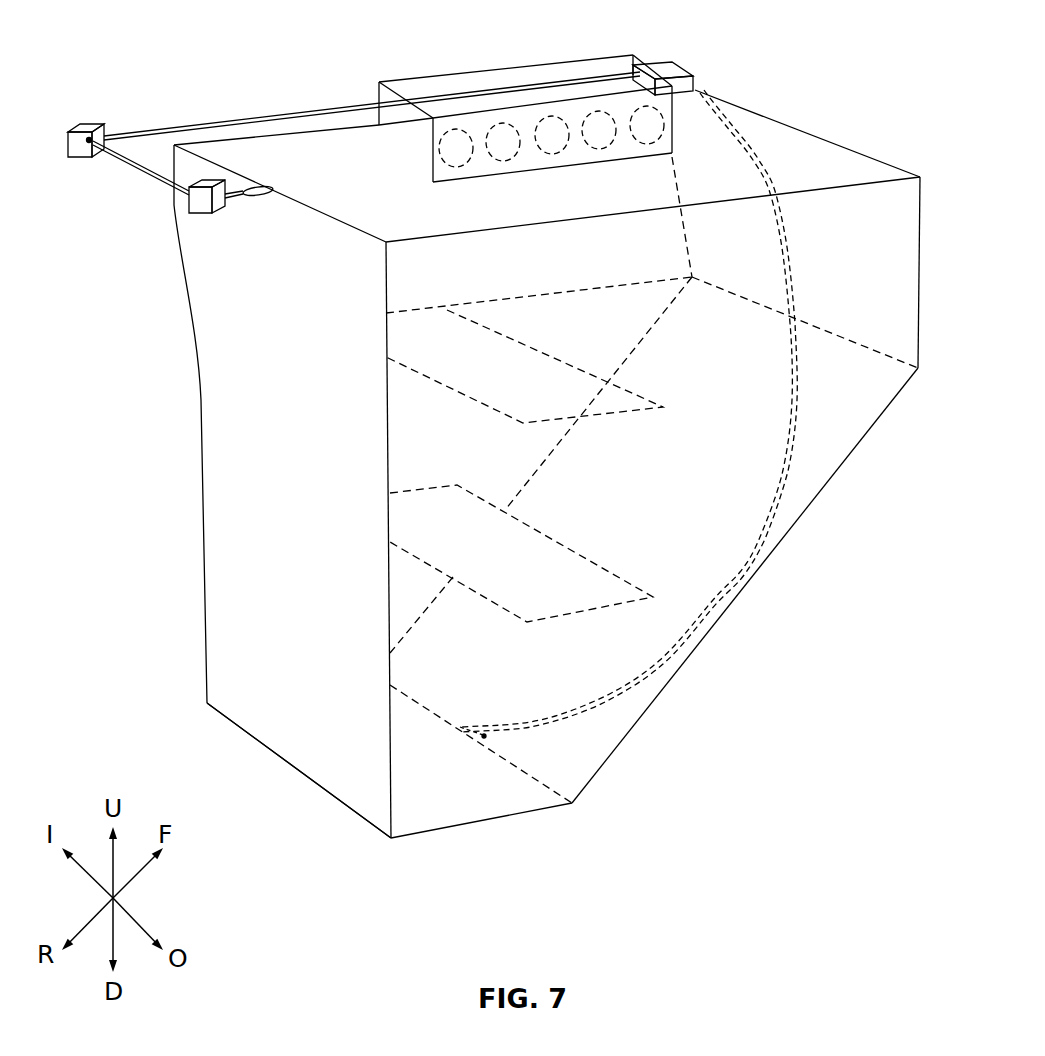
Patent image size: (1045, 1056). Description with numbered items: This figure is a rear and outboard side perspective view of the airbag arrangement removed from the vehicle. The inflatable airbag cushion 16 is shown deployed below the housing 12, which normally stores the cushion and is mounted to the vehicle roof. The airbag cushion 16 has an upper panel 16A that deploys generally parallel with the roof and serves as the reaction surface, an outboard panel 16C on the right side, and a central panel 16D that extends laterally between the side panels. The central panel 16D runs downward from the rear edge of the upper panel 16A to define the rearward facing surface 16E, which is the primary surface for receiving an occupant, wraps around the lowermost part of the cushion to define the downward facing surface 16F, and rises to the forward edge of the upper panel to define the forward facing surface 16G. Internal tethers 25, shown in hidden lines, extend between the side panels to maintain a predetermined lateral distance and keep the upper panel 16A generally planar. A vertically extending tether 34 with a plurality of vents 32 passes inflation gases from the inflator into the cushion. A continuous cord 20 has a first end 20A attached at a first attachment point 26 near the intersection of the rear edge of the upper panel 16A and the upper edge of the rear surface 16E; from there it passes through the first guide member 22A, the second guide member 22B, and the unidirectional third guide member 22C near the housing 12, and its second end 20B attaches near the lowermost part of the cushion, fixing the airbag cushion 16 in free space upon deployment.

The housing 12 is at (384, 82).
The airbag cushion 16 is at (186, 300).
The upper panel 16A is at (797, 167).
The outboard panel 16C is at (842, 423).
The central panel 16D is at (222, 591).
The rearward facing surface 16E is at (236, 677).
The downward facing surface 16F is at (480, 820).
The forward facing surface 16G is at (782, 543).
The continuous cord 20 is at (178, 130).
The first end 20A is at (265, 200).
The second end 20B is at (488, 737).
The first guide member 22A is at (190, 198).
The second guide member 22B is at (87, 124).
The third guide member 22C is at (647, 66).
The internal tether 25 is at (605, 413).
The first attachment point 26 is at (270, 187).
The vent 32 is at (552, 117).
The vertically extending tether 34 is at (504, 124).